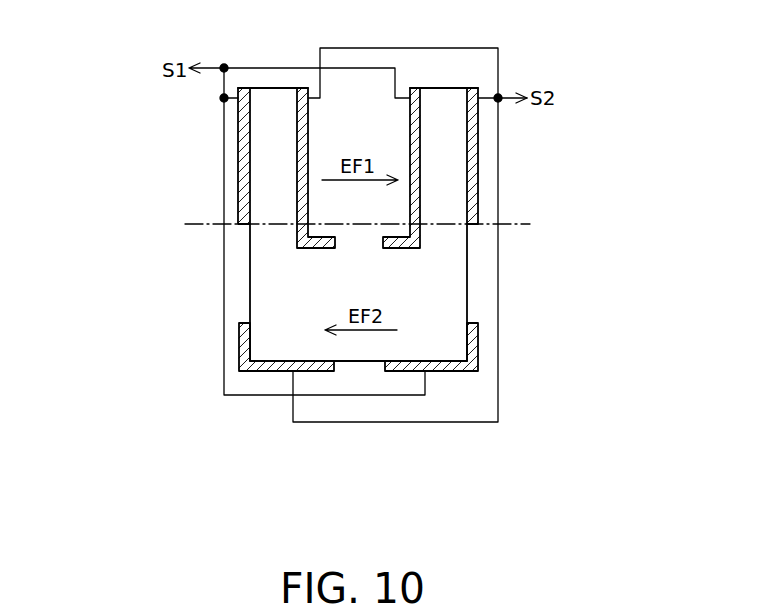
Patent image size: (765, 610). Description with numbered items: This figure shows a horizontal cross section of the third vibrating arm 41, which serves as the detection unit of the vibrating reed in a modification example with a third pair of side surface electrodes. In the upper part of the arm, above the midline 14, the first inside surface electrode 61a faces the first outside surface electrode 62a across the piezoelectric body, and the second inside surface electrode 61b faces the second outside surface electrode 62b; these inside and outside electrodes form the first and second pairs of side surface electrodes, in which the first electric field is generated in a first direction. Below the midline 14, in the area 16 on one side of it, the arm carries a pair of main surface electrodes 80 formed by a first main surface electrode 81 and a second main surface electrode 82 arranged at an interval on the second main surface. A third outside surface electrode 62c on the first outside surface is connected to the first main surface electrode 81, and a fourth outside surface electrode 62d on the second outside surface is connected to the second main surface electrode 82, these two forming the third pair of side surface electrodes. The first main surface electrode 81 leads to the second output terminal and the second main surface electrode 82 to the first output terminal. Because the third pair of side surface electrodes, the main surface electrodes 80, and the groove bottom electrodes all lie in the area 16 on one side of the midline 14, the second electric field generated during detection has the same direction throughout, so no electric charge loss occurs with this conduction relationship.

The midline 14 is at (512, 224).
The area 16 is at (186, 224).
The third vibrating arm 41 is at (470, 289).
The first inside surface electrode 61a is at (310, 125).
The second inside surface electrode 61b is at (412, 158).
The first outside surface electrode 62a is at (238, 178).
The second outside surface electrode 62b is at (478, 137).
The third outside surface electrode 62c is at (239, 348).
The fourth outside surface electrode 62d is at (478, 340).
The pair of main surface electrodes 80 is at (423, 478).
The first main surface electrode 81 is at (312, 371).
The second main surface electrode 82 is at (407, 371).